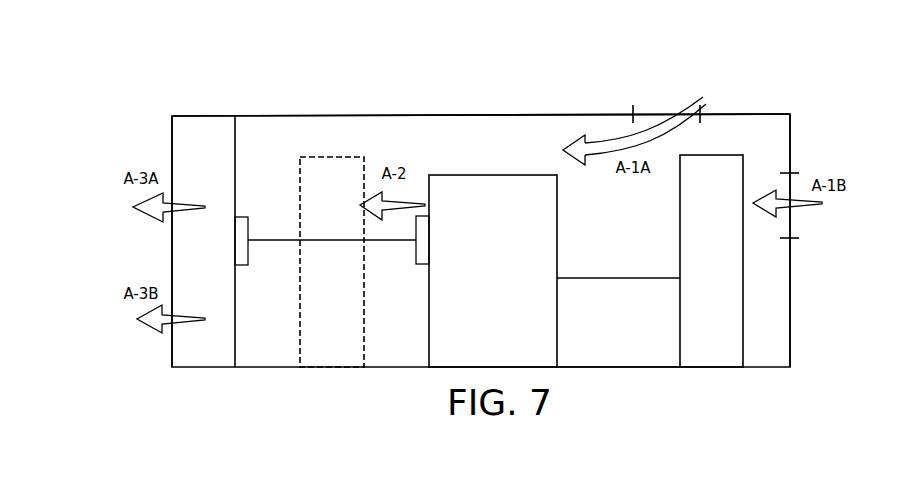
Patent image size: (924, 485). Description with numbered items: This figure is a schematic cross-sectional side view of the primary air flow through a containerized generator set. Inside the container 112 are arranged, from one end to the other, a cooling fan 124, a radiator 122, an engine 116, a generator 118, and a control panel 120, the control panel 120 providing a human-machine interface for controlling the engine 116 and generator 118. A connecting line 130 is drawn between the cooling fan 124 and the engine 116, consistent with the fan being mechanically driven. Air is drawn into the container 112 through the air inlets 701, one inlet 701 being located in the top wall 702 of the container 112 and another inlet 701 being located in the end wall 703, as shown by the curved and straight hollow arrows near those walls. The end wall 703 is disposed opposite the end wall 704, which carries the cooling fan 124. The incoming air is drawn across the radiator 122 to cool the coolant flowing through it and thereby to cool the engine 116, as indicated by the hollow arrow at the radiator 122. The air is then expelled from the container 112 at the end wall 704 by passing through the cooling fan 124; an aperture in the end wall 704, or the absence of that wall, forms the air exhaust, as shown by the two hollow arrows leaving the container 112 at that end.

The container 112 is at (335, 106).
The engine 116 is at (472, 293).
The generator 118 is at (596, 312).
The control panel 120 is at (696, 276).
The radiator 122 is at (316, 322).
The cooling fan 124 is at (183, 265).
The connection line 130 is at (280, 252).
The air inlet 701 is at (655, 90).
The top wall 702 is at (478, 115).
The end wall 703 is at (791, 323).
The end wall 704 is at (171, 352).